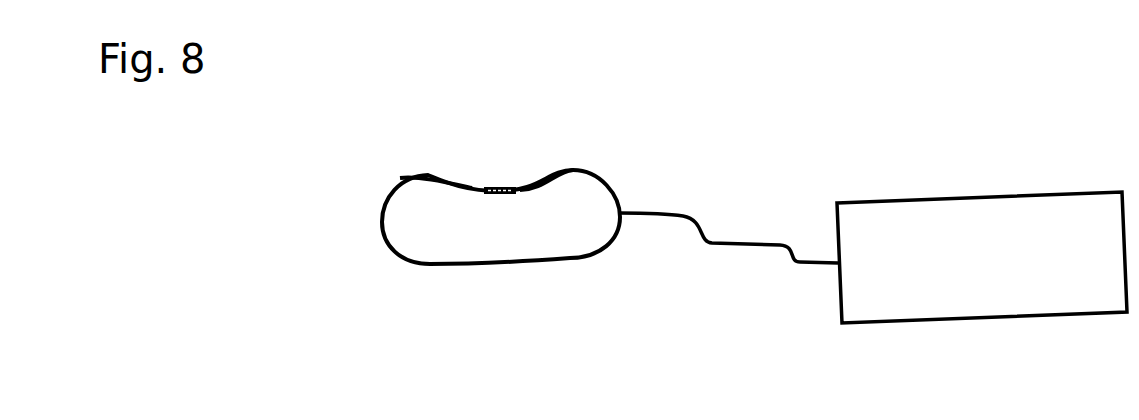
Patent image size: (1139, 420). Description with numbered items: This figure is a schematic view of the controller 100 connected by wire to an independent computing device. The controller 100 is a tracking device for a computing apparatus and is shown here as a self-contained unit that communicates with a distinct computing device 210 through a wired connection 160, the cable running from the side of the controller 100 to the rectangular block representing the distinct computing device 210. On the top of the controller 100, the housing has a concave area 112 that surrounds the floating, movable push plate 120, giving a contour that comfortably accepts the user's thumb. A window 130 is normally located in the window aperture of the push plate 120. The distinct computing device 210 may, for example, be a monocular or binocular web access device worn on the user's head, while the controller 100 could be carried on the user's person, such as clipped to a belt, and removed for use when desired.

The controller 100 is at (577, 202).
The concave area 112 is at (552, 182).
The push plate 120 is at (472, 188).
The window 130 is at (492, 187).
The wired connection 160 is at (727, 242).
The distinct computing device 210 is at (1020, 205).